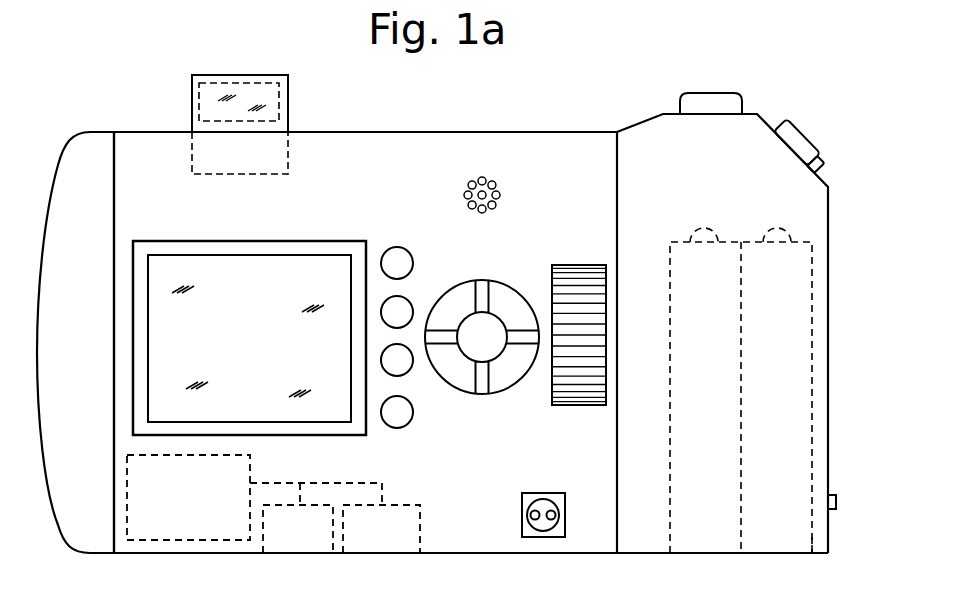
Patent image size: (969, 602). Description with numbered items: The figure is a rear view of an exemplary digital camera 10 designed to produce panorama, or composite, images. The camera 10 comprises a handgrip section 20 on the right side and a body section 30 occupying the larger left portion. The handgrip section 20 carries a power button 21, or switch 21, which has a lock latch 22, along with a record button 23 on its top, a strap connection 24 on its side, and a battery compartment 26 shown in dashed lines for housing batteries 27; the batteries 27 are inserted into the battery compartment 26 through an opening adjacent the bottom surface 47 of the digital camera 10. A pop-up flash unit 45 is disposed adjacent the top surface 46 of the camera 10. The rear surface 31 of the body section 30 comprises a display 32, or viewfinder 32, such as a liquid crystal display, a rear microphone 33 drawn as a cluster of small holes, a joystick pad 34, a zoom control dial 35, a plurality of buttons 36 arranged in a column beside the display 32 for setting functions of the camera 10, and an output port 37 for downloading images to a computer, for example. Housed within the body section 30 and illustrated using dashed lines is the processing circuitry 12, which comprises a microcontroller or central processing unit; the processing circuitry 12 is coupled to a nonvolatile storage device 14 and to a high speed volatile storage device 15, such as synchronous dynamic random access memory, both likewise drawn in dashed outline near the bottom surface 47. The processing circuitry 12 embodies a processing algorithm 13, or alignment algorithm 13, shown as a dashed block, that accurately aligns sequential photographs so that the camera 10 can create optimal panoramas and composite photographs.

The digital camera 10 is at (90, 101).
The processing circuitry 12 is at (252, 472).
The processing algorithm 13 is at (197, 511).
The nonvolatile storage device 14 is at (298, 548).
The high speed storage device 15 is at (410, 548).
The handgrip section 20 is at (645, 555).
The power button 21 is at (796, 124).
The lock latch 22 is at (821, 165).
The record button 23 is at (679, 104).
The strap connection 24 is at (838, 501).
The battery compartment 26 is at (812, 537).
The batteries 27 is at (760, 233).
The body section 30 is at (570, 555).
The rear surface 31 is at (568, 142).
The display 32 is at (352, 436).
The rear microphone 33 is at (466, 186).
The joystick pad 34 is at (498, 393).
The zoom control dial 35 is at (577, 408).
The buttons 36 is at (408, 372).
The output port 37 is at (556, 493).
The pop-up flash unit 45 is at (290, 96).
The top surface 46 is at (143, 130).
The bottom surface 47 is at (143, 555).